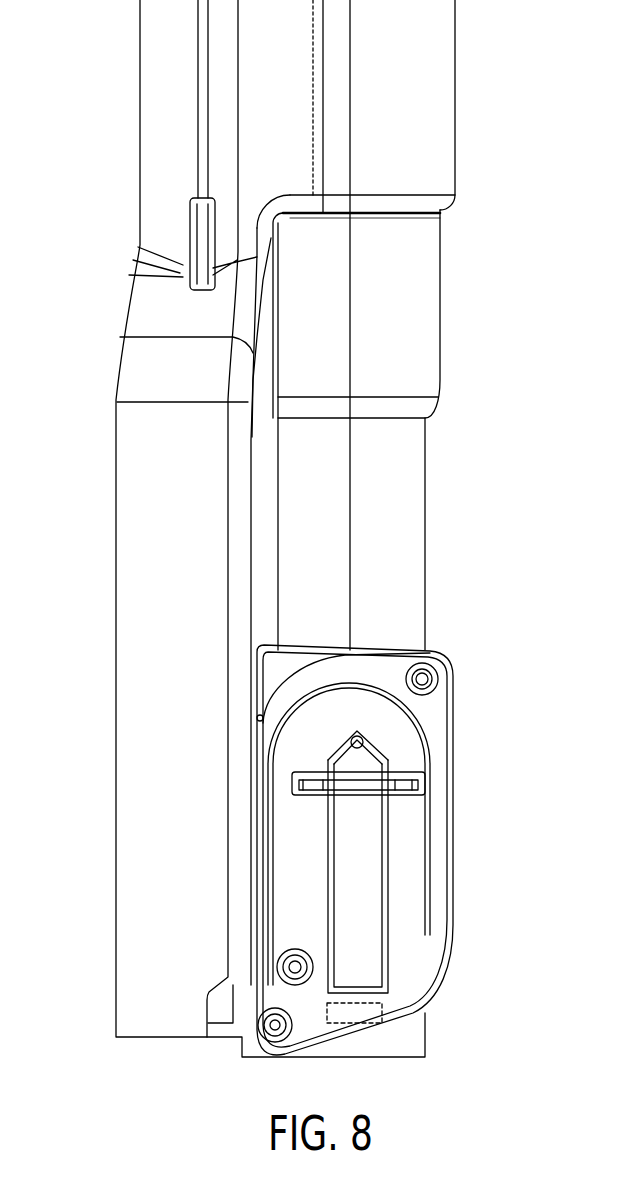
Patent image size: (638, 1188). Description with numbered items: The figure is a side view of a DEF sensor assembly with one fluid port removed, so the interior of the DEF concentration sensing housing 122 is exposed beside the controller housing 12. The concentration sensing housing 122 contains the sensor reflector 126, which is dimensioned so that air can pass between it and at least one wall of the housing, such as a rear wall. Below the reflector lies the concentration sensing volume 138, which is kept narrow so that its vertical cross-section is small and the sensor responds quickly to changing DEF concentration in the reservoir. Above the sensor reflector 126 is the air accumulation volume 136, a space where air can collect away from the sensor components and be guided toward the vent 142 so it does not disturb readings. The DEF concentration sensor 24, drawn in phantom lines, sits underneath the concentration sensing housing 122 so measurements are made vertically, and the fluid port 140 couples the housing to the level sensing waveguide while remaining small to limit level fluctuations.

The controller housing 12 is at (128, 652).
The DEF concentration sensor 24 is at (382, 1004).
The DEF concentration sensing housing 122 is at (382, 655).
The sensor reflector 126 is at (405, 783).
The air accumulation volume 136 is at (387, 763).
The concentration sensing volume 138 is at (362, 850).
The fluid port 140 is at (280, 960).
The vent 142 is at (364, 741).